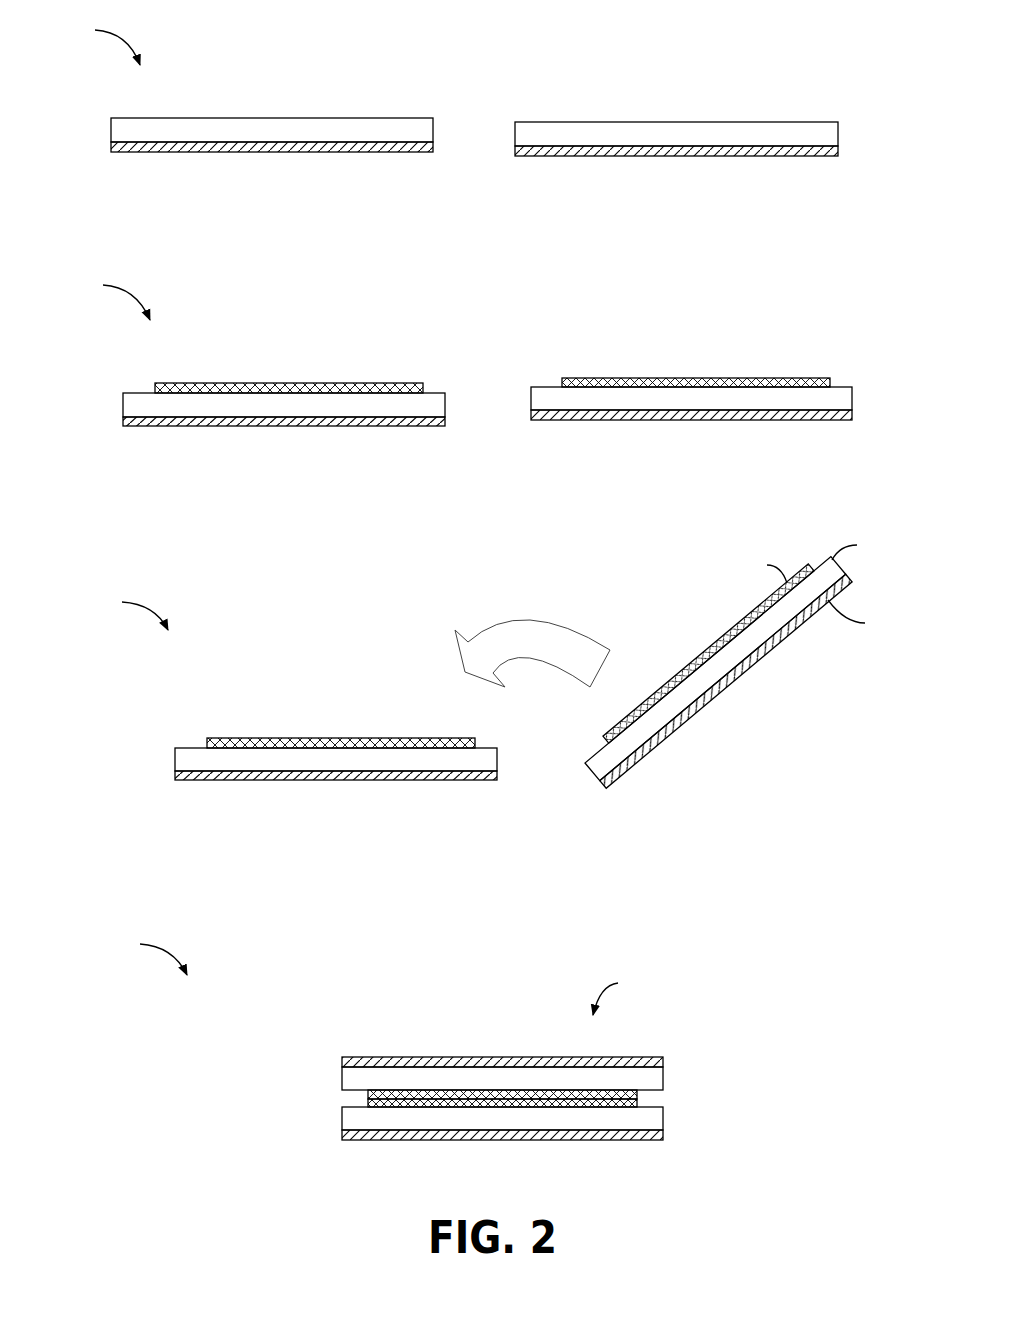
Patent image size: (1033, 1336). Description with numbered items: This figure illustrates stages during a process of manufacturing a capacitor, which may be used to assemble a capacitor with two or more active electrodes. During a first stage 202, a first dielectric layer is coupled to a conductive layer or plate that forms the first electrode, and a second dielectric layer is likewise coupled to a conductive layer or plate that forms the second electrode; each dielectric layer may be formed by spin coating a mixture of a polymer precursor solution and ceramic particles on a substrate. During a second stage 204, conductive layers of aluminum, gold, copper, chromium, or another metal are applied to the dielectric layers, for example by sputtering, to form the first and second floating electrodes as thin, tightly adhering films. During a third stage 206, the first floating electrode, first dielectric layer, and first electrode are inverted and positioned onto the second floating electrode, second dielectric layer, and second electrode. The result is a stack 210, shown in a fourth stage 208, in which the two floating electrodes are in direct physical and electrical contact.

The first stage 202 is at (96, 46).
The second stage 204 is at (106, 296).
The third stage 206 is at (124, 610).
The fourth stage 208 is at (142, 954).
The stack 210 is at (629, 995).